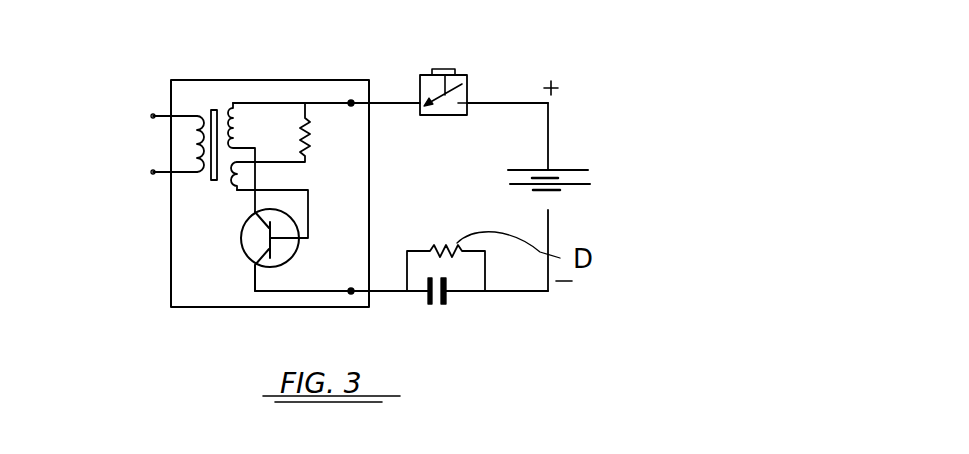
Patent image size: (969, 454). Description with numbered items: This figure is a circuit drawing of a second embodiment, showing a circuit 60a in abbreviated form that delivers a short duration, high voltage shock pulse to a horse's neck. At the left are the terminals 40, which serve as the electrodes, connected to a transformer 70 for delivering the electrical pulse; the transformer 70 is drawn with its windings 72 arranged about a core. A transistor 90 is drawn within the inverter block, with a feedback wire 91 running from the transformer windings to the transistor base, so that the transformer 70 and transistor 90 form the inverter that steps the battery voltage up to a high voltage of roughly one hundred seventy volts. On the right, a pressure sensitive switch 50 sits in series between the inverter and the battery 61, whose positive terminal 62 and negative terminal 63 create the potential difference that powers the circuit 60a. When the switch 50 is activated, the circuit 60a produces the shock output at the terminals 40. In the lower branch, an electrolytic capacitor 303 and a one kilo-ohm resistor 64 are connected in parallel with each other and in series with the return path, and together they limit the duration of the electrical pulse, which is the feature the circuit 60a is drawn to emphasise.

The terminals 40 is at (147, 167).
The transformer 70 is at (206, 102).
The windings 72 is at (202, 174).
The transistor 90 is at (240, 252).
The base feedback wire 91 is at (306, 243).
The pressure sensitive switch 50 is at (478, 80).
The circuit 60a is at (413, 73).
The positive terminal 62 is at (549, 103).
The battery 61 is at (570, 165).
The negative terminal 63 is at (572, 290).
The resistor 64 is at (472, 250).
The electrolytic capacitor 303 is at (446, 310).